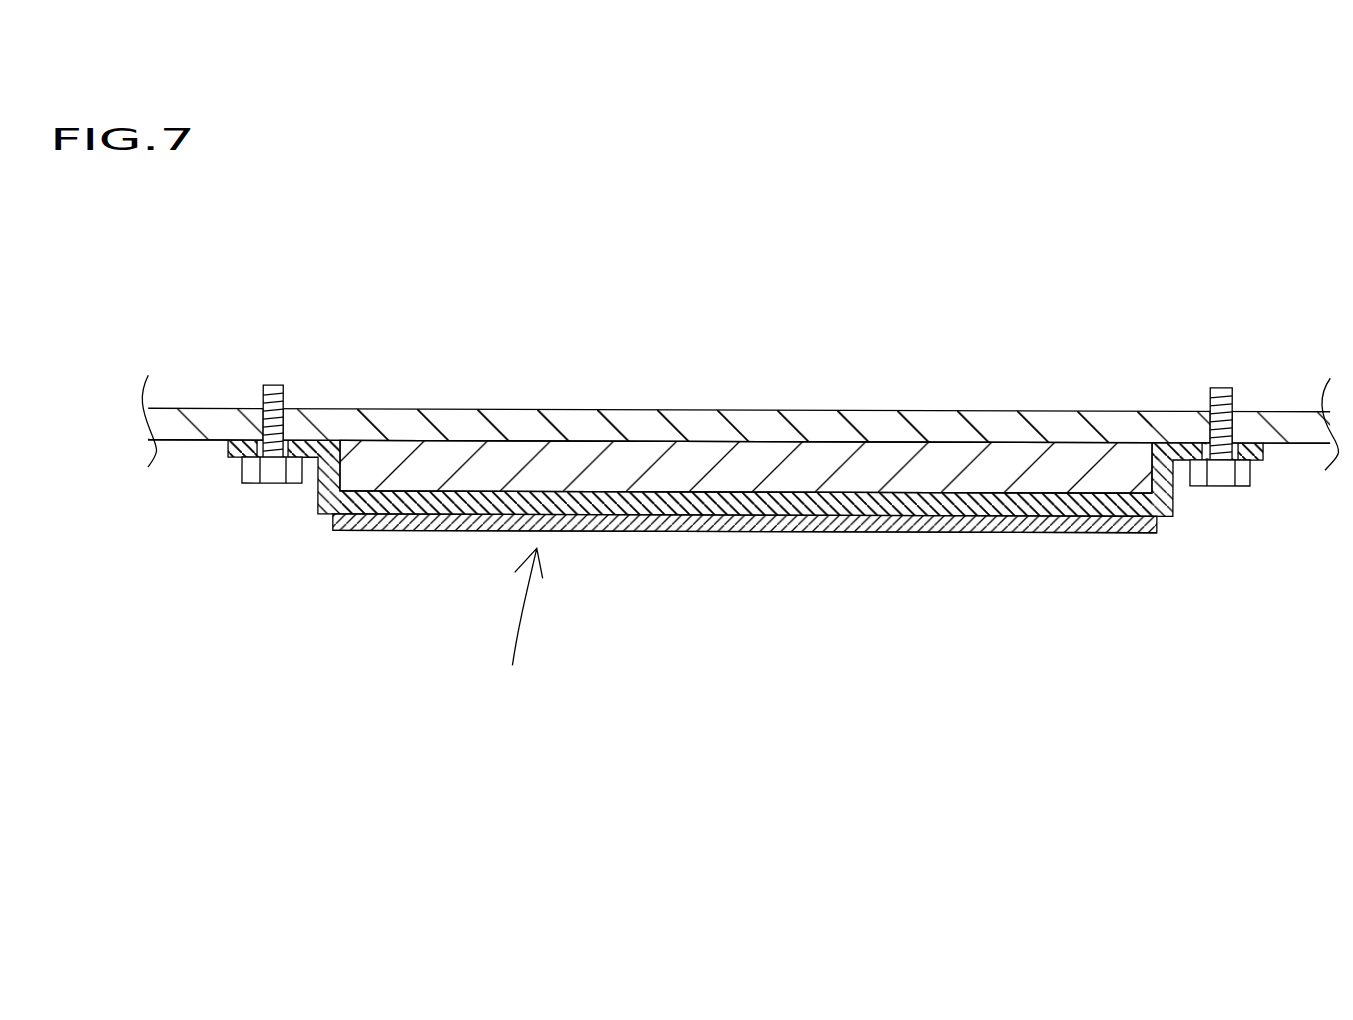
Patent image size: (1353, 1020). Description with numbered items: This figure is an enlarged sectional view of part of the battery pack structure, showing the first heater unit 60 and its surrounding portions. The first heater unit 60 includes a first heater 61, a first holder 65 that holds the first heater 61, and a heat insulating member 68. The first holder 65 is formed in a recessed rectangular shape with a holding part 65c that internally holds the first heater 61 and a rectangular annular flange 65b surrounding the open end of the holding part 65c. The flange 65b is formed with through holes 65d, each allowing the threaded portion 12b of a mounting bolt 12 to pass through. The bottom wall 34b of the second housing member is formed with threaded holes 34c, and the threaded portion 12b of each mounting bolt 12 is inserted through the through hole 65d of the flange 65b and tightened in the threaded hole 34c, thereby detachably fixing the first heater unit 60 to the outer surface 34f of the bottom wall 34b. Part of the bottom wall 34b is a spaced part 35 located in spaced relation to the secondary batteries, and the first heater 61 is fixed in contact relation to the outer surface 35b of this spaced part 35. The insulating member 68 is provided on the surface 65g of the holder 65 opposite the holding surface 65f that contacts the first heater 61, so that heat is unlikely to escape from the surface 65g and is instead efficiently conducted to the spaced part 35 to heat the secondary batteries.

The mounting bolt 12 is at (274, 478).
The threaded portion 12b is at (267, 387).
The bottom wall 34b is at (207, 430).
The threaded hole 34c is at (278, 424).
The outer surface 34f is at (222, 448).
The spaced part 35 is at (792, 422).
The outer surface 35b is at (885, 445).
The first heater unit 60 is at (520, 622).
The first heater 61 is at (410, 467).
The first holder 65 is at (717, 531).
The flange 65b is at (243, 454).
The holding part 65c is at (1012, 506).
The through hole 65d is at (268, 464).
The holding surface 65f is at (586, 494).
The surface 65g is at (643, 531).
The heat insulating member 68 is at (456, 532).